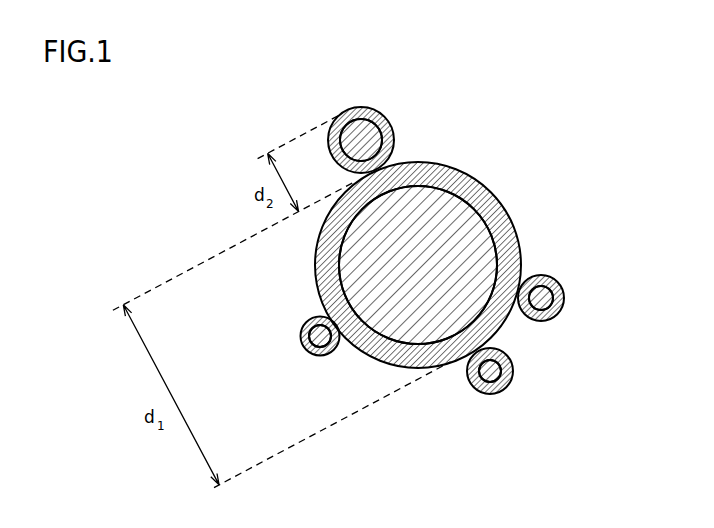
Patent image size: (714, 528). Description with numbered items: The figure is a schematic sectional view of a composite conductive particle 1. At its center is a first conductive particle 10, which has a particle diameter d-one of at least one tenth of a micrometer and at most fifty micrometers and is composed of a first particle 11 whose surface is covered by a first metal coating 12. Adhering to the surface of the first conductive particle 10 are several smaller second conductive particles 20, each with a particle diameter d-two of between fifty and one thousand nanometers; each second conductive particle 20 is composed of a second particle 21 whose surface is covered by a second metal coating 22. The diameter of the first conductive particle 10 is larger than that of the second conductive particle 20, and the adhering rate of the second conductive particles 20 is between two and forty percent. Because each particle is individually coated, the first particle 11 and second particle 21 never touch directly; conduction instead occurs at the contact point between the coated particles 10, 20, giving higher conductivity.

The composite conductive particle 1 is at (576, 141).
The first conductive particle 10 is at (477, 265).
The first particle 11 is at (483, 213).
The first metal coating 12 is at (508, 243).
The second conductive particle 20 is at (452, 247).
The second particle 21 is at (501, 365).
The second metal coating 22 is at (505, 388).